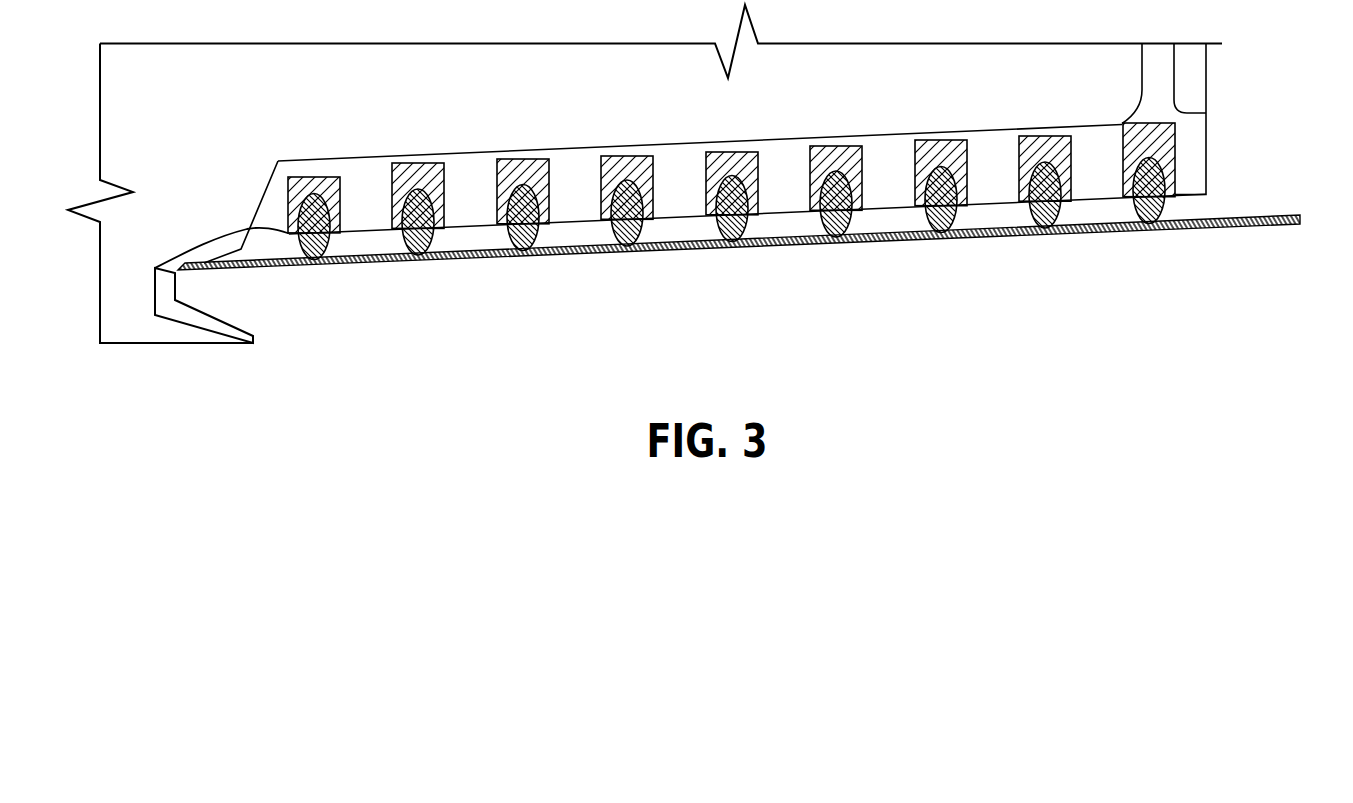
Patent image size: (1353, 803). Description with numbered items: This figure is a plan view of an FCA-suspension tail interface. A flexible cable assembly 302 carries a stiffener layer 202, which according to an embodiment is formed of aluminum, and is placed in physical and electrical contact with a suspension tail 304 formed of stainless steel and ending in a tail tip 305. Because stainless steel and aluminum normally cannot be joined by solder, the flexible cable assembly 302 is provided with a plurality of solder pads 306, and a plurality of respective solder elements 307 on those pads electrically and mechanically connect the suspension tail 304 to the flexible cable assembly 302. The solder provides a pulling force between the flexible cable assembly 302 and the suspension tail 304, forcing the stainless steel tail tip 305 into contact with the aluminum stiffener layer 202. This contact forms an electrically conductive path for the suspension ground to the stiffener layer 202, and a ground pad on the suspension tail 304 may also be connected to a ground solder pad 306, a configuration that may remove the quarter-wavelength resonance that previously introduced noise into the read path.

The stiffener layer 202 is at (232, 337).
The flexible cable assembly 302 is at (1193, 162).
The suspension tail 304 is at (1300, 219).
The tail tip 305 is at (257, 271).
The solder pads 306 is at (318, 182).
The solder elements 307 is at (325, 258).